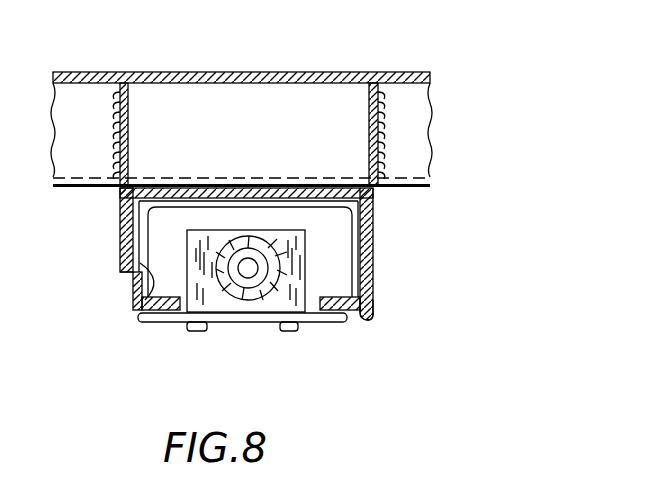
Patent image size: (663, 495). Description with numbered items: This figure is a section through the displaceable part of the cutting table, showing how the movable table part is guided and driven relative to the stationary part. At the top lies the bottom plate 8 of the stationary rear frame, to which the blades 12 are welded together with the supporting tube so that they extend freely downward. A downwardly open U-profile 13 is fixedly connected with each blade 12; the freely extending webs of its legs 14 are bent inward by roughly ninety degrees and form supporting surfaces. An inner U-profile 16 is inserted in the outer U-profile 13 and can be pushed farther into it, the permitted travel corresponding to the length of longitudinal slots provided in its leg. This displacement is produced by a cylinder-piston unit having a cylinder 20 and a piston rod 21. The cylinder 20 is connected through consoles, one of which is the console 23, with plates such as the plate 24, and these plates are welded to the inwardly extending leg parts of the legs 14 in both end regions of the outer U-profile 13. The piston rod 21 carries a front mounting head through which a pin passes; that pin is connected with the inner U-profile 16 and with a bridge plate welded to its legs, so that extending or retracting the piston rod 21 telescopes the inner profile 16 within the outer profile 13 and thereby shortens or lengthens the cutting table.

The bottom plate 8 is at (290, 95).
The blades 12 is at (125, 222).
The U-profile 13 is at (128, 297).
The legs 14 is at (147, 322).
The U-profile 16 is at (373, 292).
The cylinder 20 is at (260, 312).
The piston rod 21 is at (240, 275).
The console 23 is at (298, 282).
The plate 24 is at (248, 272).